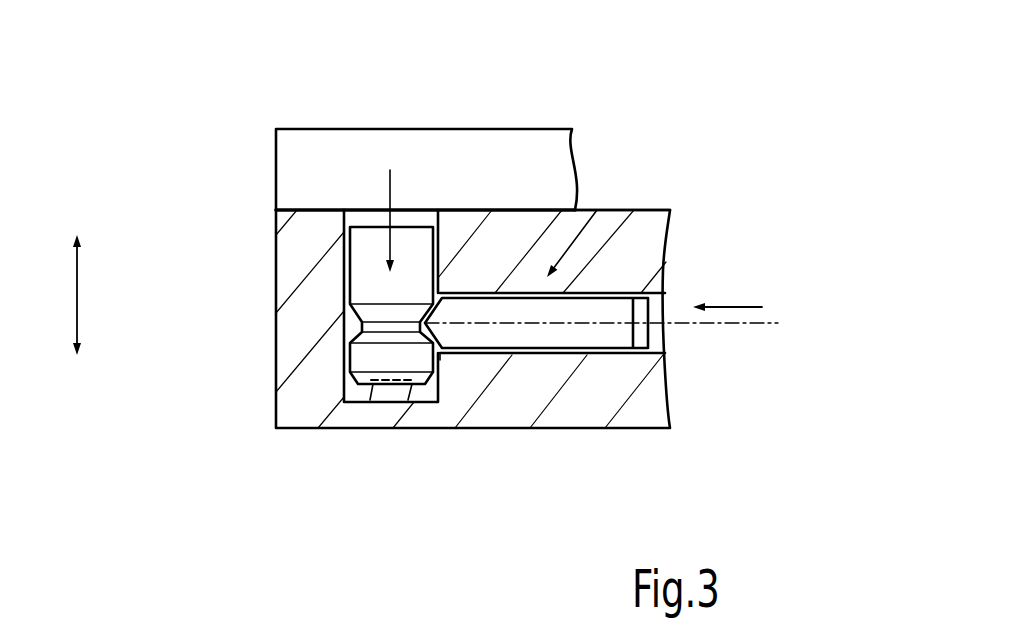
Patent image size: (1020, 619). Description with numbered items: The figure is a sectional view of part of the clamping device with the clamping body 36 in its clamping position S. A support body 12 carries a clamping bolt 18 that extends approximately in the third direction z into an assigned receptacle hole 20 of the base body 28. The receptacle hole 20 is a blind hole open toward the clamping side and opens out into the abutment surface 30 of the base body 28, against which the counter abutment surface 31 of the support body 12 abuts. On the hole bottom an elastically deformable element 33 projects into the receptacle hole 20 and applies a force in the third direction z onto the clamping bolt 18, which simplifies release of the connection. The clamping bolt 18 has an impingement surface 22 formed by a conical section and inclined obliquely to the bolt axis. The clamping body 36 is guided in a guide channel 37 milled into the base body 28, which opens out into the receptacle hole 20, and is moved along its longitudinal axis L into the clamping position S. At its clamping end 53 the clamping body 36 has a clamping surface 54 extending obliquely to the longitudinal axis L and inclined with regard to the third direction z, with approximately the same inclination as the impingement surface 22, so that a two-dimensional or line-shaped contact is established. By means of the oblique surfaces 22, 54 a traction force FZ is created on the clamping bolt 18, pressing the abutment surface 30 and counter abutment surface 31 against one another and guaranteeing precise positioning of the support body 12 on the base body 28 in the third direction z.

The support body 12 is at (528, 145).
The clamping bolt 18 is at (363, 248).
The receptacle hole 20 is at (338, 394).
The impingement surface 22 is at (334, 337).
The base body 28 is at (658, 412).
The abutment surface 30 is at (457, 200).
The counter abutment surface 31 is at (525, 222).
The elastically deformable element 33 is at (387, 396).
The clamping body 36 is at (550, 333).
The guide channel 37 is at (628, 292).
The clamping end 53 is at (454, 366).
The clamping surface 54 is at (430, 358).
The traction force FZ is at (390, 187).
The clamping position S is at (597, 210).
The third direction z is at (77, 287).
The longitudinal axis L is at (728, 323).